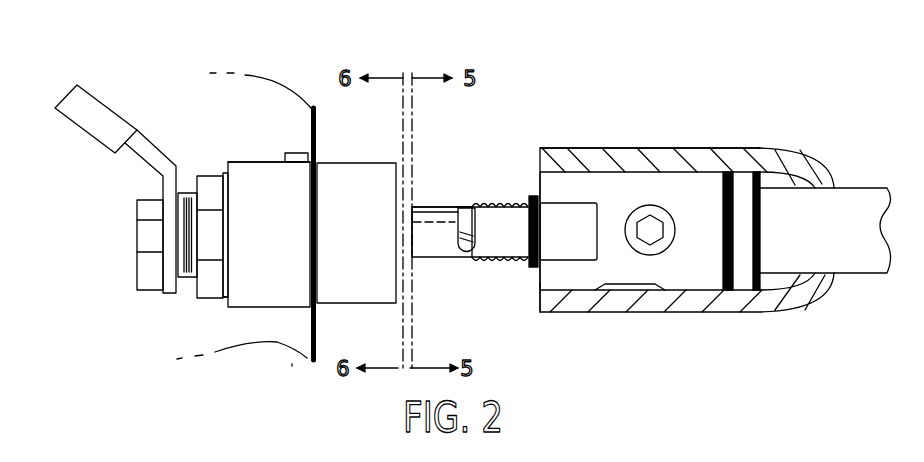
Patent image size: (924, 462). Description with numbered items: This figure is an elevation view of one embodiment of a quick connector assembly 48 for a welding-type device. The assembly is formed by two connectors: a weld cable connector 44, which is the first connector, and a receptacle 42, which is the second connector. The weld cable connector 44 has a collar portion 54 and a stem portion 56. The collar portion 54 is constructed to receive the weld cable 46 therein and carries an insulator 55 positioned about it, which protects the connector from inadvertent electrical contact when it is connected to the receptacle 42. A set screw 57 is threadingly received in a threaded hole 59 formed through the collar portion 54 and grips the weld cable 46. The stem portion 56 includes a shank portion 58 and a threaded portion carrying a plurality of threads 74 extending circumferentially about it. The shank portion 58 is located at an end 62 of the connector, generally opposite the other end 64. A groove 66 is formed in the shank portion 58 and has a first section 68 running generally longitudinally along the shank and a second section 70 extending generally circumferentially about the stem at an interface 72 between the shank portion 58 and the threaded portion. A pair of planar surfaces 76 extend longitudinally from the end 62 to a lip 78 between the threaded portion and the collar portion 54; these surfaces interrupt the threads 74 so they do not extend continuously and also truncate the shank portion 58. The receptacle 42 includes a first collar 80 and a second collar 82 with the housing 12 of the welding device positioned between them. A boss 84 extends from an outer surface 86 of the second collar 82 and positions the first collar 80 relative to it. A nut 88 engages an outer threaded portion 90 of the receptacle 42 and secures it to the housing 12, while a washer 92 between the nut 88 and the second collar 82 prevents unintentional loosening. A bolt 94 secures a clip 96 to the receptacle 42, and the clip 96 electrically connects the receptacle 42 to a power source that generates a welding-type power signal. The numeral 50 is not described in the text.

The housing 12 is at (316, 123).
The receptacle 42 is at (292, 366).
The weld cable connector 44 is at (673, 111).
The weld cable 46 is at (797, 188).
The connector assembly 48 is at (539, 71).
The threaded shank 50 is at (503, 263).
The collar portion 54 is at (697, 173).
The insulator 55 is at (770, 300).
The stem portion 56 is at (501, 145).
The set screw 57 is at (648, 232).
The shank portion 58 is at (423, 251).
The threaded hole 59 is at (670, 243).
The end 62 is at (403, 215).
The end 64 is at (762, 167).
The groove 66 is at (451, 195).
The first section 68 is at (414, 210).
The second section 70 is at (470, 256).
The interface 72 is at (469, 203).
The threads 74 is at (506, 200).
The planar surfaces 76 is at (520, 230).
The lip 78 is at (534, 285).
The first collar 80 is at (358, 166).
The second collar 82 is at (269, 167).
The boss 84 is at (297, 156).
The outer surface 86 is at (283, 237).
The nut 88 is at (208, 176).
The outer threaded portion 90 is at (188, 192).
The washer 92 is at (220, 295).
The bolt 94 is at (142, 270).
The clip 96 is at (147, 153).